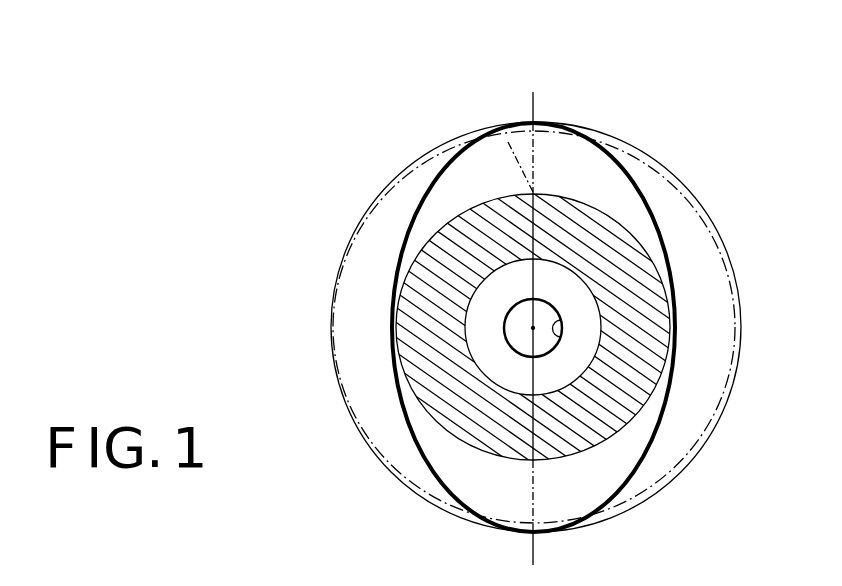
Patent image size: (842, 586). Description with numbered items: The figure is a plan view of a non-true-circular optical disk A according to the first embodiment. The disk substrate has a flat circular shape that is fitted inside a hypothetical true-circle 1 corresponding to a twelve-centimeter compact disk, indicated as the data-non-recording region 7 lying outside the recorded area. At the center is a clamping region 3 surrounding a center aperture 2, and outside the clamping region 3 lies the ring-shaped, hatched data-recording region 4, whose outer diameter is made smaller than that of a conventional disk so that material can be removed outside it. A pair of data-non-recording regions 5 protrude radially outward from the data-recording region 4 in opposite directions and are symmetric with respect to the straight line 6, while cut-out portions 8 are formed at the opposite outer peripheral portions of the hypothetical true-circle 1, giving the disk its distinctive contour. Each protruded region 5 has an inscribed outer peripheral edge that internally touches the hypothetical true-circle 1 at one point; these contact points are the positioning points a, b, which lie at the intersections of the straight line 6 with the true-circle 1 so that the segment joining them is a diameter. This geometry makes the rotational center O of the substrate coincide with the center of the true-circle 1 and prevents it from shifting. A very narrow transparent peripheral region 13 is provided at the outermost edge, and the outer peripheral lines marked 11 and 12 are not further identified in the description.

The optical disk A is at (624, 118).
The hypothetical true-circle 1 is at (660, 162).
The center aperture 2 is at (563, 332).
The clamping region 3 is at (583, 347).
The data-recording region 4 is at (627, 378).
The data-non-recording region 5 is at (481, 172).
The straight line 6 is at (508, 142).
The data-non-recording region 7 is at (682, 236).
The cut-out portion 8 is at (693, 385).
The outer line 11 is at (379, 190).
The outer locus line 12 is at (350, 245).
The transparent peripheral region 13 is at (324, 310).
The positioning point a is at (538, 123).
The positioning point b is at (531, 533).
The rotational center O is at (535, 325).